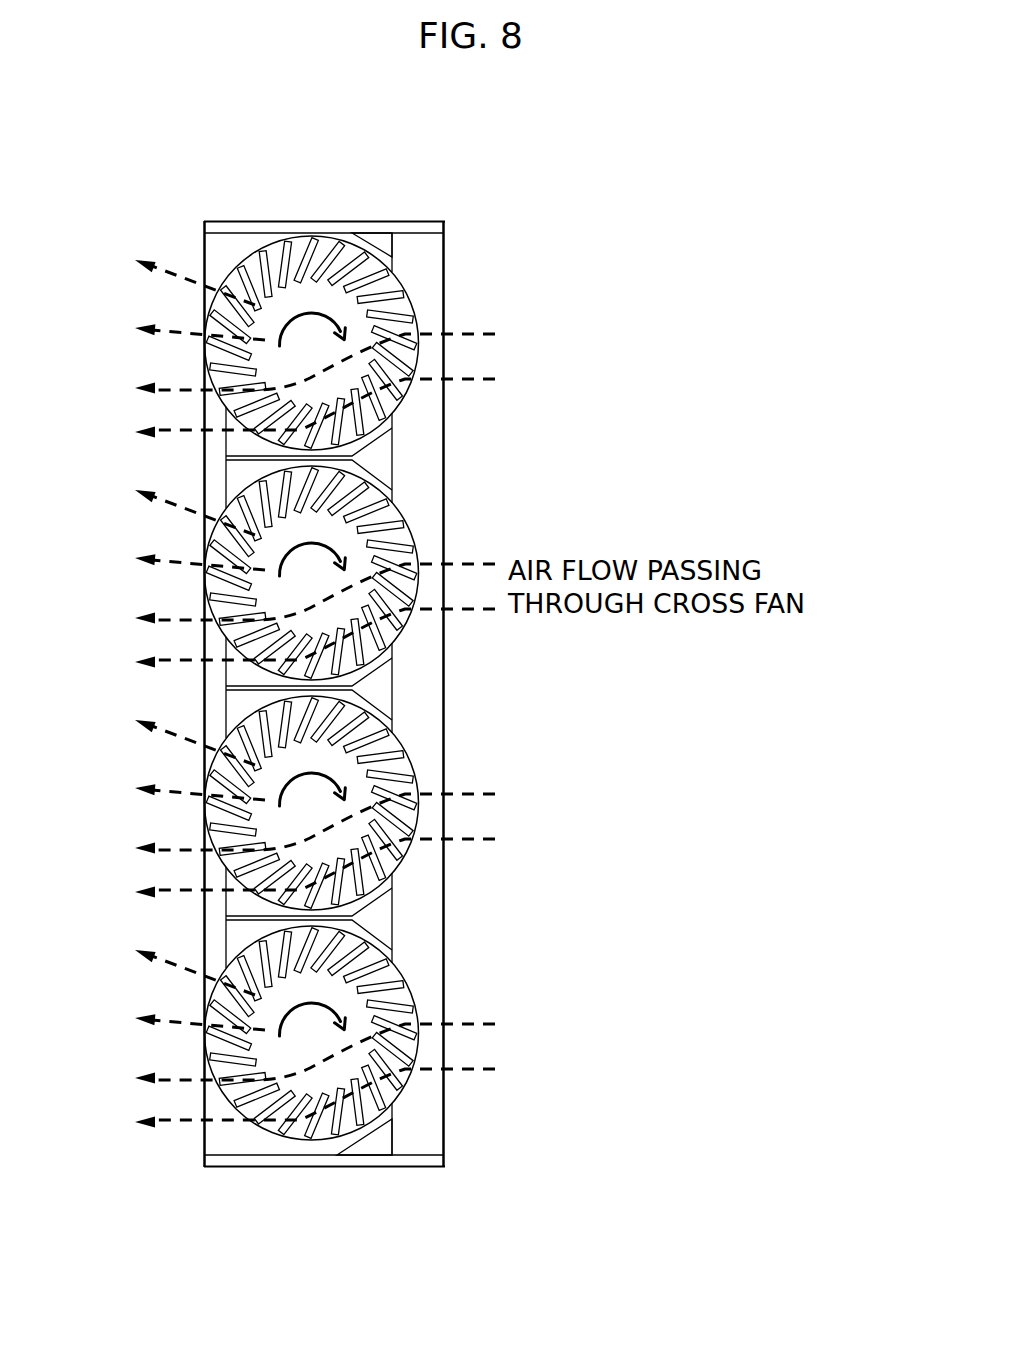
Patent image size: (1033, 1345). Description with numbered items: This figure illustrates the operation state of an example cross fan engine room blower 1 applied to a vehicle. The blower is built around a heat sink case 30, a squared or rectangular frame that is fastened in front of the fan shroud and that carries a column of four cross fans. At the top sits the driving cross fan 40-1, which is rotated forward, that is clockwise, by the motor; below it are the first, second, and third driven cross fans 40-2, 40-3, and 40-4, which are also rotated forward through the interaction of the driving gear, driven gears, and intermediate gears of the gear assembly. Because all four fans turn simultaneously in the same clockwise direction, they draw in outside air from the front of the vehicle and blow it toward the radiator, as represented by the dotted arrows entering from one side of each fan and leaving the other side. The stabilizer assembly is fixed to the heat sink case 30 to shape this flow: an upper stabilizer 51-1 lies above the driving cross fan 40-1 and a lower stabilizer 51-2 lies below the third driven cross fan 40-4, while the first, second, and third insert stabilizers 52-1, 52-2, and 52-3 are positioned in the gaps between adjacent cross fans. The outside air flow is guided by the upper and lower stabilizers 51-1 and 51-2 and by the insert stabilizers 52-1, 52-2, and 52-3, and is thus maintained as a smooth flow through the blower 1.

The air conditioner indoor unit 1 is at (513, 191).
The heat sink case 30 is at (242, 221).
The driving cross fan 40-1 is at (408, 298).
The first driven cross fan 40-2 is at (408, 528).
The second driven cross fan 40-3 is at (408, 758).
The third driven cross fan 40-4 is at (408, 988).
The upper stabilizer 51-1 is at (378, 240).
The lower stabilizer 51-2 is at (382, 1147).
The first insert stabilizer 52-1 is at (382, 458).
The second insert stabilizer 52-2 is at (382, 688).
The third insert stabilizer 52-3 is at (382, 918).